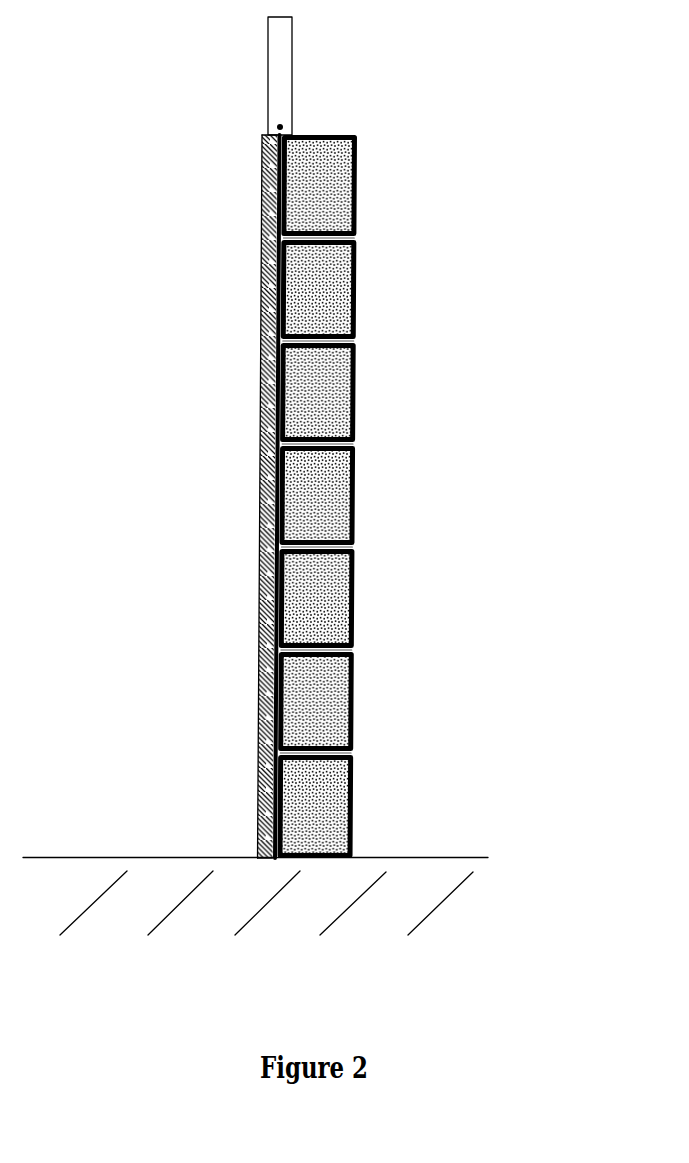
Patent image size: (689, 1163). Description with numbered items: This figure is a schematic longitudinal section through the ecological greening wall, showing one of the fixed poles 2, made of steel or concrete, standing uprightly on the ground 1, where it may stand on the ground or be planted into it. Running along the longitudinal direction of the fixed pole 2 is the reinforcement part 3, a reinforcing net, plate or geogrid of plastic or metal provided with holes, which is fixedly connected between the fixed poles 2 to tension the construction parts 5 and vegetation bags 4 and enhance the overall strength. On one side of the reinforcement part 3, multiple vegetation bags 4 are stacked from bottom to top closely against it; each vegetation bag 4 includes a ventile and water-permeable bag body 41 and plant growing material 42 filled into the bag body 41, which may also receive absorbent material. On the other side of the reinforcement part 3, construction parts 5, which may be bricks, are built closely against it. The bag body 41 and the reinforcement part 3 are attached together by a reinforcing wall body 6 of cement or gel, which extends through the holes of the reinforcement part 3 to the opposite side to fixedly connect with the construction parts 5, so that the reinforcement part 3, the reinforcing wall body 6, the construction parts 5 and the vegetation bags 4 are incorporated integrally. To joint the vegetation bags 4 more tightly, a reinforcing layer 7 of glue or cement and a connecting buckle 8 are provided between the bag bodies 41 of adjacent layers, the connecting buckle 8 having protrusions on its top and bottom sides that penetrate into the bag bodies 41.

The ground 1 is at (437, 857).
The fixed pole 2 is at (288, 63).
The reinforcement part 3 is at (262, 258).
The vegetation bag 4 is at (397, 497).
The bag body 41 is at (353, 400).
The plant growing material 42 is at (353, 353).
The construction part 5 is at (262, 352).
The reinforcing wall body 6 is at (262, 310).
The reinforcing layer 7 is at (355, 542).
The connecting buckle 8 is at (355, 510).